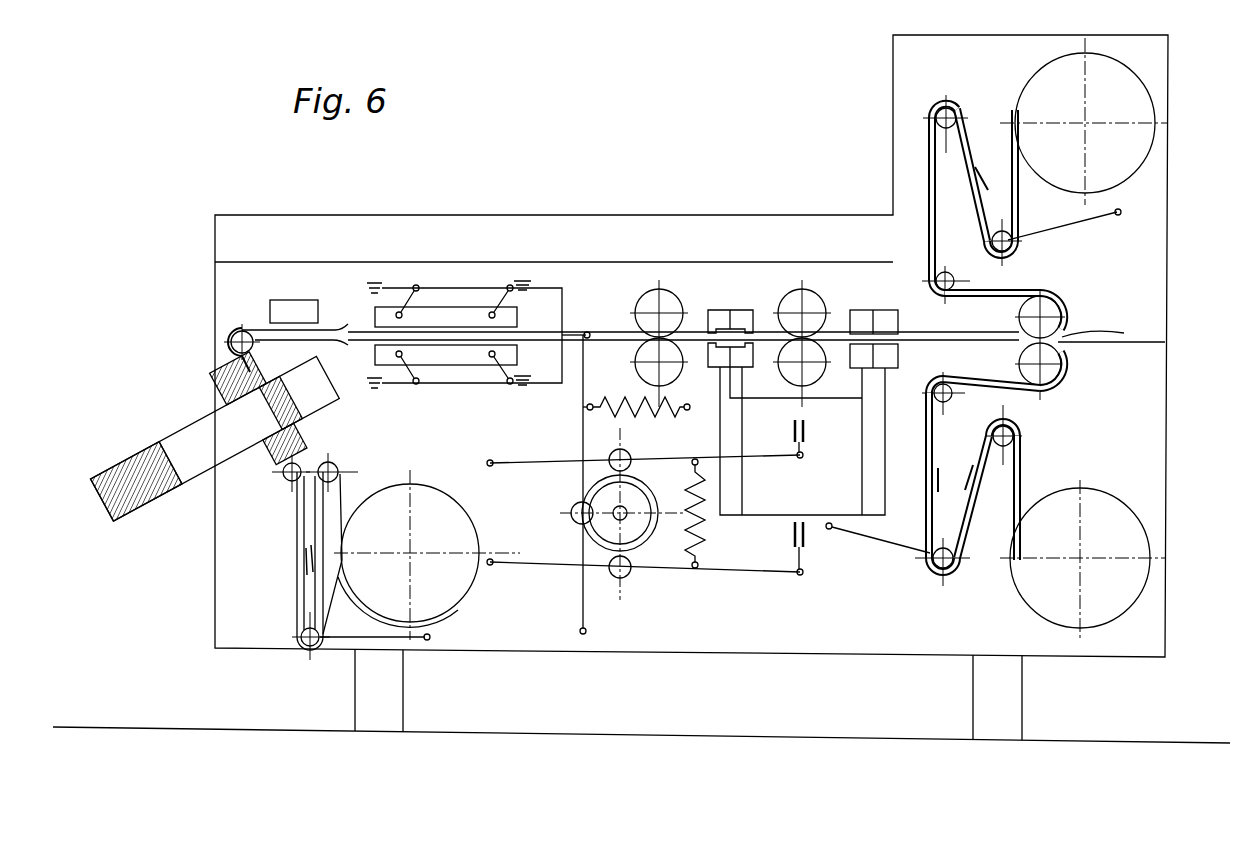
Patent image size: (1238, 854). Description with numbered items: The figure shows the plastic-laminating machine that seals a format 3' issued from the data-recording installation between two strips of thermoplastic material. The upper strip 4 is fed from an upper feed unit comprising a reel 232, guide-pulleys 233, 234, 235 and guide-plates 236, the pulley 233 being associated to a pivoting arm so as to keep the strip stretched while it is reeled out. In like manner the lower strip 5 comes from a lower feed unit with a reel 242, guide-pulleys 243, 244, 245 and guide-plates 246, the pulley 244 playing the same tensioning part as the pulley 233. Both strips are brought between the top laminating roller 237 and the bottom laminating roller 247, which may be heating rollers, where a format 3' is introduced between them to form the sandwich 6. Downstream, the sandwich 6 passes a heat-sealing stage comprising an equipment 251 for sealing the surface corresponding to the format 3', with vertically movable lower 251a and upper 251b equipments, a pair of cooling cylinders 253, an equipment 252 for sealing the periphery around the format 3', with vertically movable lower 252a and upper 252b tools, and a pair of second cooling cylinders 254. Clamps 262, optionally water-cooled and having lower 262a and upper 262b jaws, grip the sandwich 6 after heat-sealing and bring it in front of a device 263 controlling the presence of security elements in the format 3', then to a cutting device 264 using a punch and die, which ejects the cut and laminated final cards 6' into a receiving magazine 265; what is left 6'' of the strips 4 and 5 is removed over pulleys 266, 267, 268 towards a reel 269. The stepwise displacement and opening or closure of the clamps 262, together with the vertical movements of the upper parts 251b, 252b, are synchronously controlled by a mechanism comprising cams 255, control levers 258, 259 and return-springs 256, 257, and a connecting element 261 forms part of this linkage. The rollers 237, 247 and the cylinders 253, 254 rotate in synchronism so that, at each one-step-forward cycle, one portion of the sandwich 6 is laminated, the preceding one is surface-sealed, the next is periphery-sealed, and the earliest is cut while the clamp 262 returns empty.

The format 3' is at (1111, 321).
The upper strip of thermoplastic material 4 is at (1019, 203).
The lower strip of thermoplastic material 5 is at (1022, 468).
The sandwich 6 is at (630, 324).
The final cards 6' is at (204, 447).
The left-over of the plastic strips 6'' is at (288, 561).
The reel 232 is at (1150, 90).
The guide-pulley 233 is at (1014, 248).
The guide-pulley 234 is at (943, 108).
The guide-pulley 235 is at (962, 270).
The guide-plates 236 is at (940, 176).
The top laminating roller 237 is at (1062, 307).
The reel 242 is at (1127, 483).
The guide-pulley 243 is at (1018, 436).
The guide-pulley 244 is at (952, 564).
The guide-pulley 245 is at (951, 396).
The guide-plates 246 is at (934, 455).
The bottom laminating roller 247 is at (1064, 371).
The surface heat-sealing equipment 251 is at (858, 304).
The lower equipment 251a is at (898, 358).
The upper equipment 251b is at (881, 316).
The periphery heat-sealing equipment 252 is at (712, 310).
The lower tool 252a is at (756, 372).
The upper tool 252b is at (760, 300).
The pair of cooling cylinders 253 is at (818, 297).
The pair of second cooling cylinders 254 is at (642, 300).
The cams 255 is at (656, 547).
The return-spring 256 is at (680, 430).
The return-spring 257 is at (708, 539).
The control lever 258 is at (798, 458).
The control lever 259 is at (798, 577).
The connecting rod 261 is at (580, 442).
The clamps 262 is at (373, 320).
The lower jaw 262a is at (450, 366).
The upper jaw 262b is at (450, 307).
The control device 263 is at (301, 299).
The cutting device 264 is at (302, 432).
The receiving magazine 265 is at (194, 420).
The pulley 266 is at (290, 481).
The pulley 267 is at (311, 648).
The pulley 268 is at (395, 457).
The reel 269 is at (463, 505).